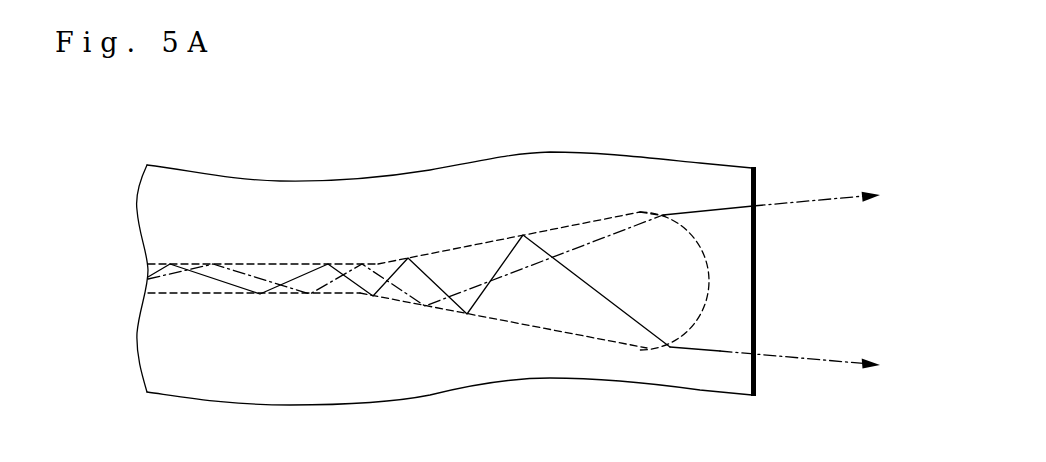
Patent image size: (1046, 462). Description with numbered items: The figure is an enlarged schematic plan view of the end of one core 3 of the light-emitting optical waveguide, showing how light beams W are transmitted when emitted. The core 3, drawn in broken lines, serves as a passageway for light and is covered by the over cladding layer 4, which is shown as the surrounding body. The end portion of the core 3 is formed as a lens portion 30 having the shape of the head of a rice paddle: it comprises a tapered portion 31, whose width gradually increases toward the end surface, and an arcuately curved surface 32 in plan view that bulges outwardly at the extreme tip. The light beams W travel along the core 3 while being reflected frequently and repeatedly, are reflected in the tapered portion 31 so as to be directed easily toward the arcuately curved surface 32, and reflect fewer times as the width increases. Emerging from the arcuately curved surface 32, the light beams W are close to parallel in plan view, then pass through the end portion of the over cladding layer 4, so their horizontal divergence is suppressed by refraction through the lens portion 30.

The core 3 is at (282, 275).
The over cladding layer 4 is at (192, 184).
The lens portion 30 is at (697, 103).
The tapered portion 31 is at (482, 243).
The arcuately curved surface 32 is at (707, 248).
The light beams W is at (800, 203).